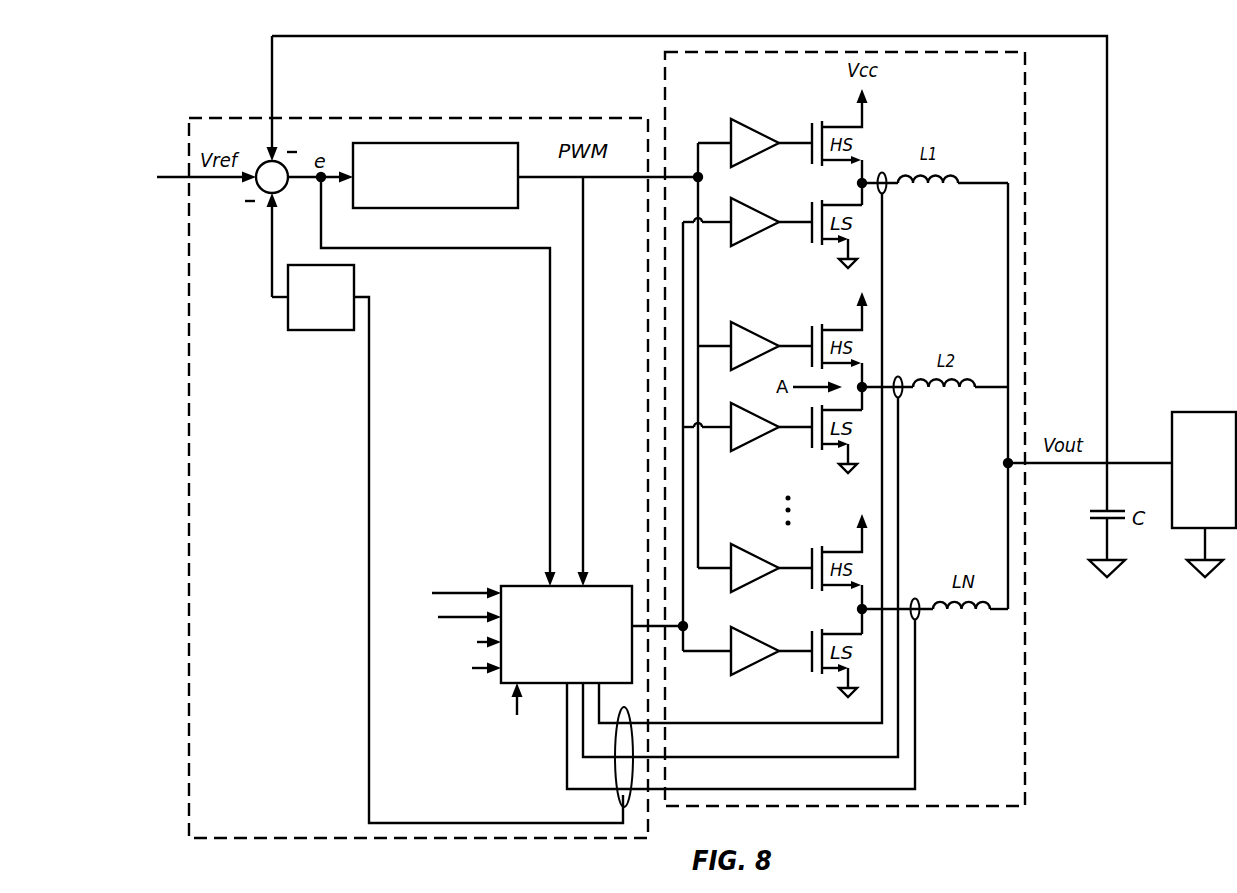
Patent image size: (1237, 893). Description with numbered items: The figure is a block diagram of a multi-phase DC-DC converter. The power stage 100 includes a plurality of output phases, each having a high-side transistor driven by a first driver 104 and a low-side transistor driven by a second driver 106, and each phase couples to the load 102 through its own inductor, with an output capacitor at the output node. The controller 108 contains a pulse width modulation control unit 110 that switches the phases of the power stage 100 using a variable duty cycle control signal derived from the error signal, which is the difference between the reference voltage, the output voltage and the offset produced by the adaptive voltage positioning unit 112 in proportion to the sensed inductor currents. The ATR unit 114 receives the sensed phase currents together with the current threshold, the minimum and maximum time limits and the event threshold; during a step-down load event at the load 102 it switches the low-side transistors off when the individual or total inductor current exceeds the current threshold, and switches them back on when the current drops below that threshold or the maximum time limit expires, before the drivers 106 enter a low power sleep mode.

The power stage 100 is at (945, 806).
The load 102 is at (1220, 491).
The first driver 104 is at (750, 329).
The second driver 106 is at (746, 442).
The controller 108 is at (188, 313).
The PWM control unit 110 is at (450, 200).
The adaptive voltage positioning unit 112 is at (336, 323).
The ATR unit 114 is at (581, 655).